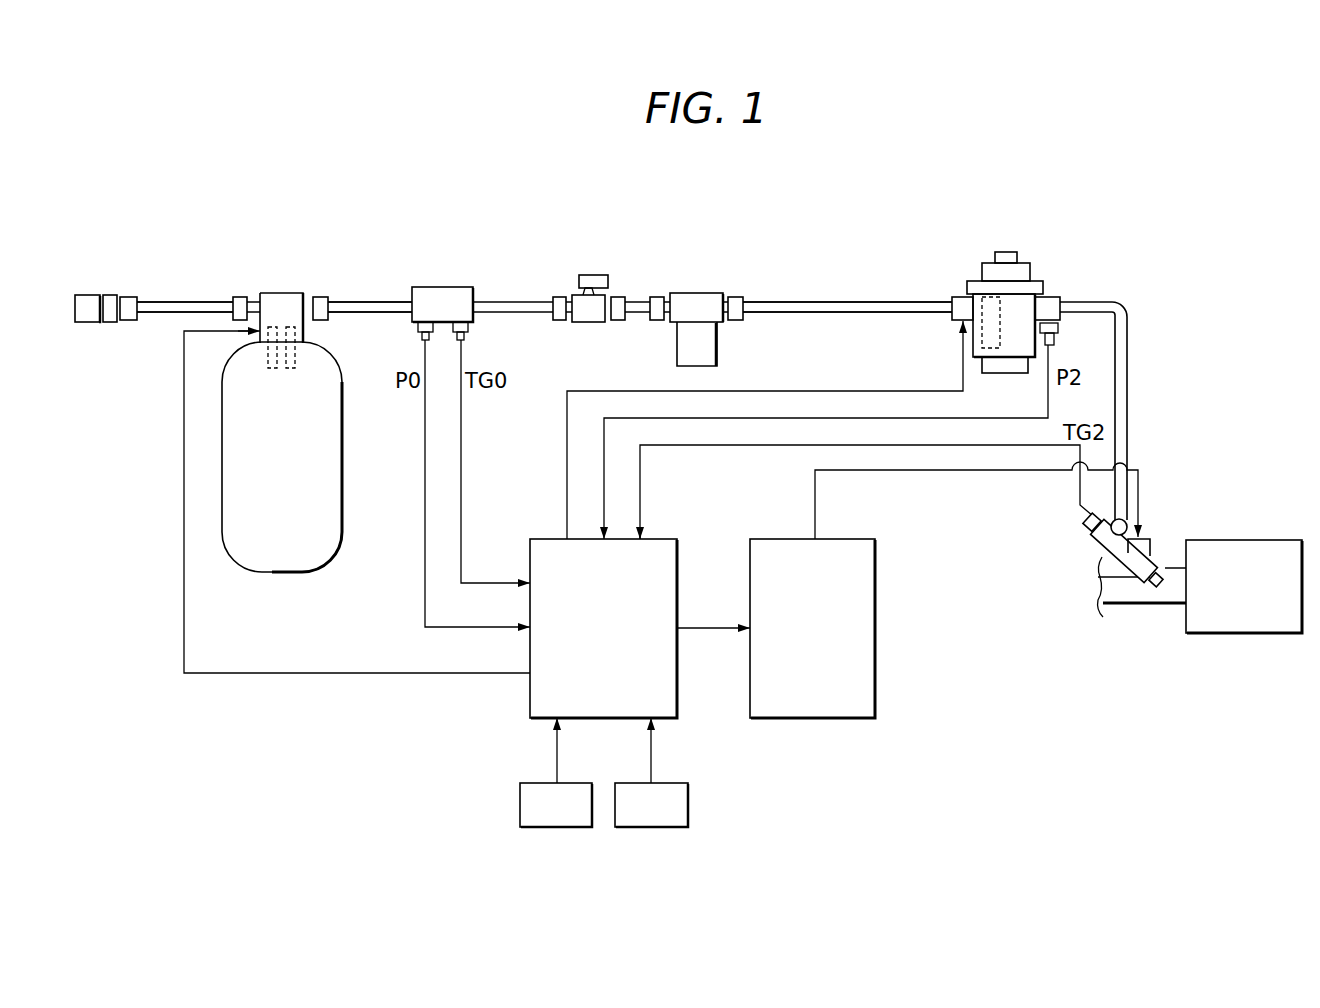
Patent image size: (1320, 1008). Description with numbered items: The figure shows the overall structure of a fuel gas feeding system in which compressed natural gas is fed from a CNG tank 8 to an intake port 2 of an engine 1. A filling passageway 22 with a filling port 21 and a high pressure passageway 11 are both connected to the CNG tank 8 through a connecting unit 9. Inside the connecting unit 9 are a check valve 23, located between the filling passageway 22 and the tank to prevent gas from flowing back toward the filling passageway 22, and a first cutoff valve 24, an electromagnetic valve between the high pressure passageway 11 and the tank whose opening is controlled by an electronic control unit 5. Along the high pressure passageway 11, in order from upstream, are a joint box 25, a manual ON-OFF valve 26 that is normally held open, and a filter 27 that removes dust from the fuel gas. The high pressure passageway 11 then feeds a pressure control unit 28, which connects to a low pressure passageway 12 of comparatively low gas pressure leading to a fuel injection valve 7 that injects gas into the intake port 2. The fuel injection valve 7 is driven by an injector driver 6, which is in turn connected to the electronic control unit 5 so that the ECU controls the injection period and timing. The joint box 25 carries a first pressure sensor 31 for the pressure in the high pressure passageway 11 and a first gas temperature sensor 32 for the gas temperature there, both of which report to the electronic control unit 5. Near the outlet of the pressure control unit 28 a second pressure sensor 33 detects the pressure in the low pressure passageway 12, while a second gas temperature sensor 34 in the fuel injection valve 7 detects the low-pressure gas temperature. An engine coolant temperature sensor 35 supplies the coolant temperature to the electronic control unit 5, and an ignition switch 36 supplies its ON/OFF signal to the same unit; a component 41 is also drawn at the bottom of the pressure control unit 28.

The engine 1 is at (1245, 539).
The intake port 2 is at (1146, 605).
The electronic control unit 5 is at (655, 538).
The injector driver 6 is at (878, 628).
The fuel injection valve 7 is at (1107, 545).
The CNG tank 8 is at (342, 455).
The connecting unit 9 is at (287, 293).
The high pressure passageway 11 is at (374, 302).
The low pressure passageway 12 is at (1127, 412).
The filling port 21 is at (97, 294).
The filling passageway 22 is at (192, 302).
The check valve 23 is at (262, 337).
The first cutoff valve 24 is at (303, 336).
The joint box 25 is at (447, 287).
The manual ON-OFF valve 26 is at (601, 276).
The filter 27 is at (701, 294).
The pressure control unit 28 is at (1020, 265).
The first pressure sensor 31 is at (412, 326).
The first gas temperature sensor 32 is at (475, 327).
The second pressure sensor 33 is at (1058, 330).
The second gas temperature sensor 34 is at (1092, 516).
The water temperature sensor TW 35 is at (689, 806).
The ignition switch 36 is at (519, 806).
The regulator solenoid / actuator 41 is at (1003, 358).